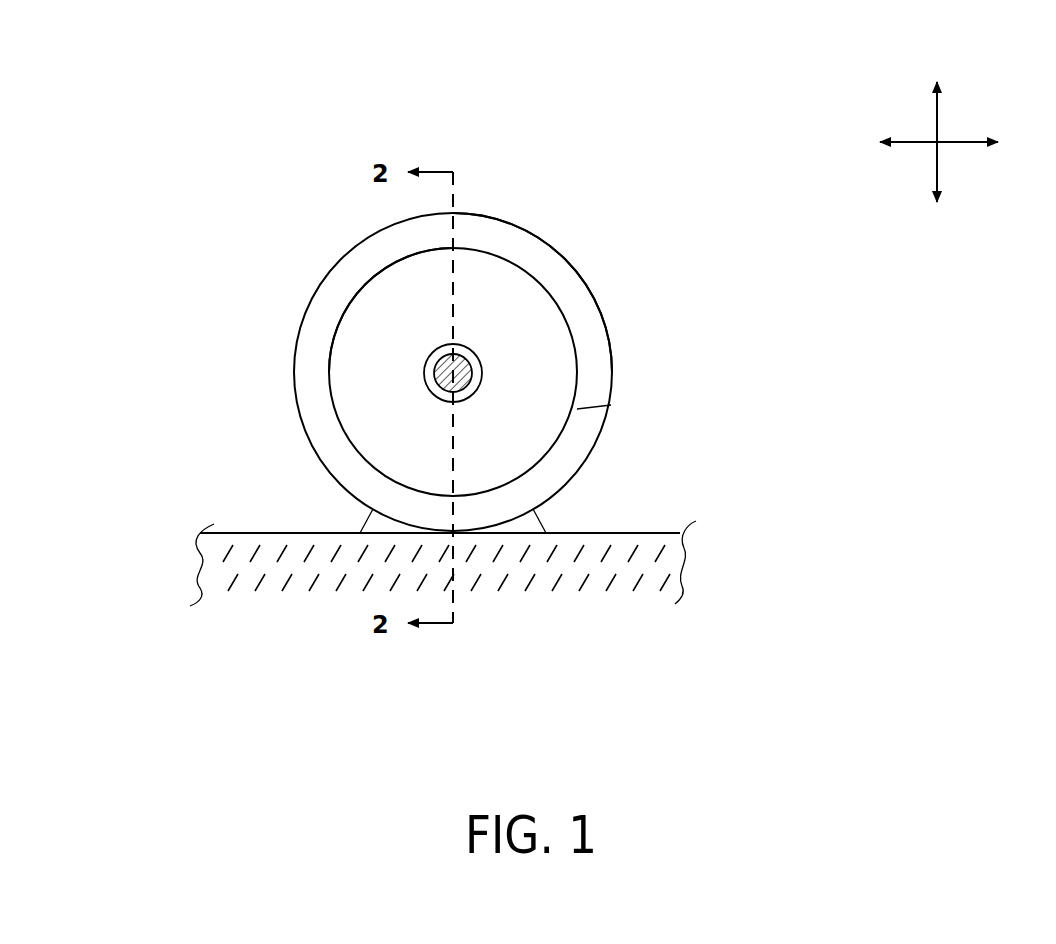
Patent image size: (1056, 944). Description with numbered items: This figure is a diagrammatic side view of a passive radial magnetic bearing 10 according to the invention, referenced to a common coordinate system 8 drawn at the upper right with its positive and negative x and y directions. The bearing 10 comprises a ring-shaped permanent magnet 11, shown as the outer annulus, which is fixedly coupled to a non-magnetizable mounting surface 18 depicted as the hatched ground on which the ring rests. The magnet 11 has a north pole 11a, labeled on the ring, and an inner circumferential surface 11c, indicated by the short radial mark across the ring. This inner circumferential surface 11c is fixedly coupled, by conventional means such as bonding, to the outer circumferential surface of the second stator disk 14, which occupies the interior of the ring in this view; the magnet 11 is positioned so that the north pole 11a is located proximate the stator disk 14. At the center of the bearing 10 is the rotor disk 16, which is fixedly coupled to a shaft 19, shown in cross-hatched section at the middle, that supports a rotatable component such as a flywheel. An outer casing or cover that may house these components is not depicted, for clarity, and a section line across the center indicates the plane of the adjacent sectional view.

The coordinate system 8 is at (960, 122).
The passive radial magnetic bearing 10 is at (553, 208).
The ring-shaped permanent magnet 11 is at (616, 342).
The north pole 11a is at (557, 277).
The inner circumferential surface 11c is at (607, 406).
The second stator disk 14 is at (404, 351).
The rotor disk 16 is at (462, 346).
The non-magnetizable mounting surface 18 is at (622, 532).
The shaft 19 is at (473, 376).